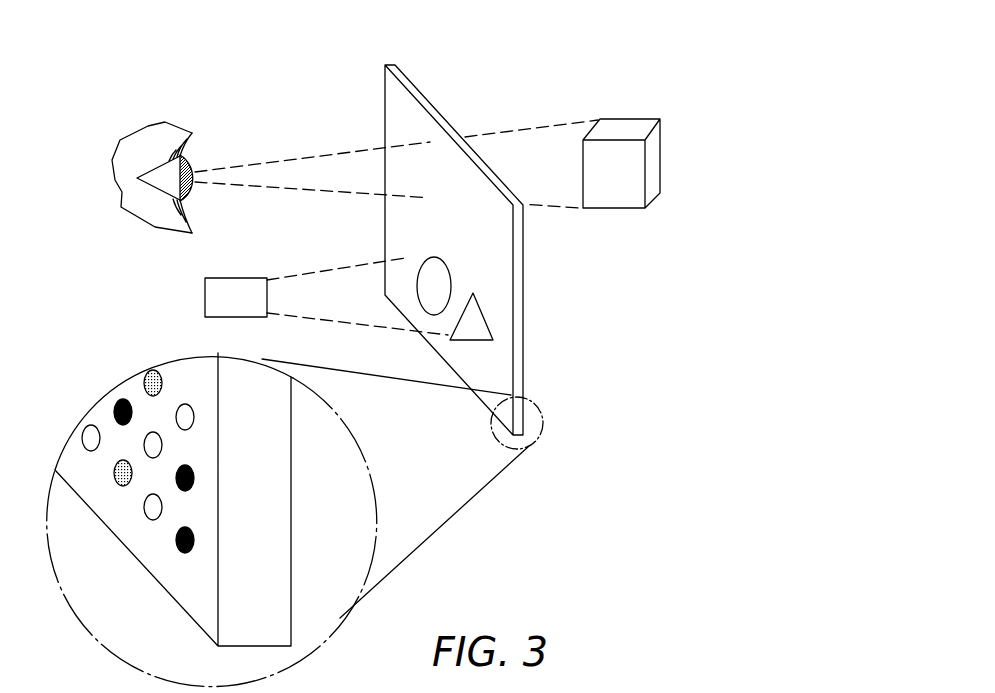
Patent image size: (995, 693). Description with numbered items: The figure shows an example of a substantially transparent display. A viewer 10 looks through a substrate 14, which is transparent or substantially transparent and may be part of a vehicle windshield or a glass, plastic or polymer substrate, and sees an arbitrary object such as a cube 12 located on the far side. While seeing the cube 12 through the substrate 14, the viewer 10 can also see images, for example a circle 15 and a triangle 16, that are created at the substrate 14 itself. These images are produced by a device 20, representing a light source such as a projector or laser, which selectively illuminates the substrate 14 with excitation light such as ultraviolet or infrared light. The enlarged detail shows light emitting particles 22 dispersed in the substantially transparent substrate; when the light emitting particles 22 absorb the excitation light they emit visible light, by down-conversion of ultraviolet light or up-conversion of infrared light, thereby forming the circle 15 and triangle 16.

The viewer 10 is at (197, 165).
The cube 12 is at (625, 128).
The substrate 14 is at (425, 104).
The circle 15 is at (423, 281).
The triangle 16 is at (462, 323).
The device 20 is at (237, 278).
The light emitting particles 22 is at (145, 384).